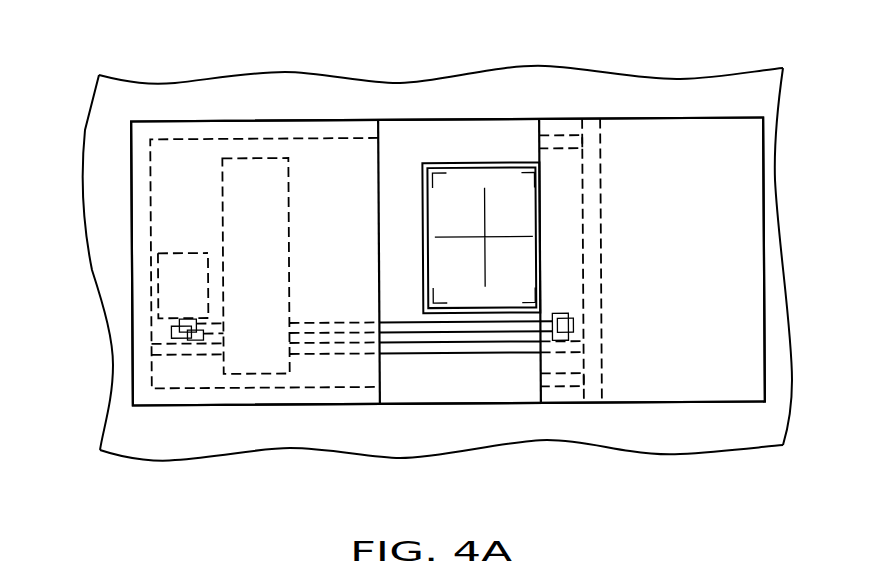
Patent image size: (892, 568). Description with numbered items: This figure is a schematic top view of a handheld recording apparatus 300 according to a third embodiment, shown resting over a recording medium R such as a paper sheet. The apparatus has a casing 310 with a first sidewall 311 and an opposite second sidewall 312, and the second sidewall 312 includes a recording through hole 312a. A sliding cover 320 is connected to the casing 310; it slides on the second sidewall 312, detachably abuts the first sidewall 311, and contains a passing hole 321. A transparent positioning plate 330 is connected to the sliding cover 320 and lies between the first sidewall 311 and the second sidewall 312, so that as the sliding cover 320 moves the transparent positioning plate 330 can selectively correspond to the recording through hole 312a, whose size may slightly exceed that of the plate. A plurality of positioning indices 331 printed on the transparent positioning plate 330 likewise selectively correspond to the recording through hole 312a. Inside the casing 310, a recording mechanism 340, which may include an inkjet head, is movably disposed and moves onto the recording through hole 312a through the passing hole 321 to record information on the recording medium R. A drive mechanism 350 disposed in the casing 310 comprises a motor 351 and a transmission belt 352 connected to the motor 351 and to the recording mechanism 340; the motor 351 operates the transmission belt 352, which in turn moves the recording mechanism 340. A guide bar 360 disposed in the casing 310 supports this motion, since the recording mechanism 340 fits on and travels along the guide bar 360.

The handheld recording apparatus 300 is at (205, 107).
The casing 310 is at (131, 158).
The first sidewall 311 is at (313, 150).
The second sidewall 312 is at (400, 393).
The recording through hole 312a is at (488, 162).
The sliding cover 320 is at (764, 168).
The passing hole 321 is at (562, 163).
The transparent positioning plate 330 is at (460, 188).
The positioning indices 331 is at (485, 222).
The recording mechanism 340 is at (233, 227).
The drive mechanism 350 is at (157, 293).
The motor 351 is at (167, 270).
The transmission belt 352 is at (203, 330).
The guide bar 360 is at (493, 348).
The recording medium R is at (765, 92).